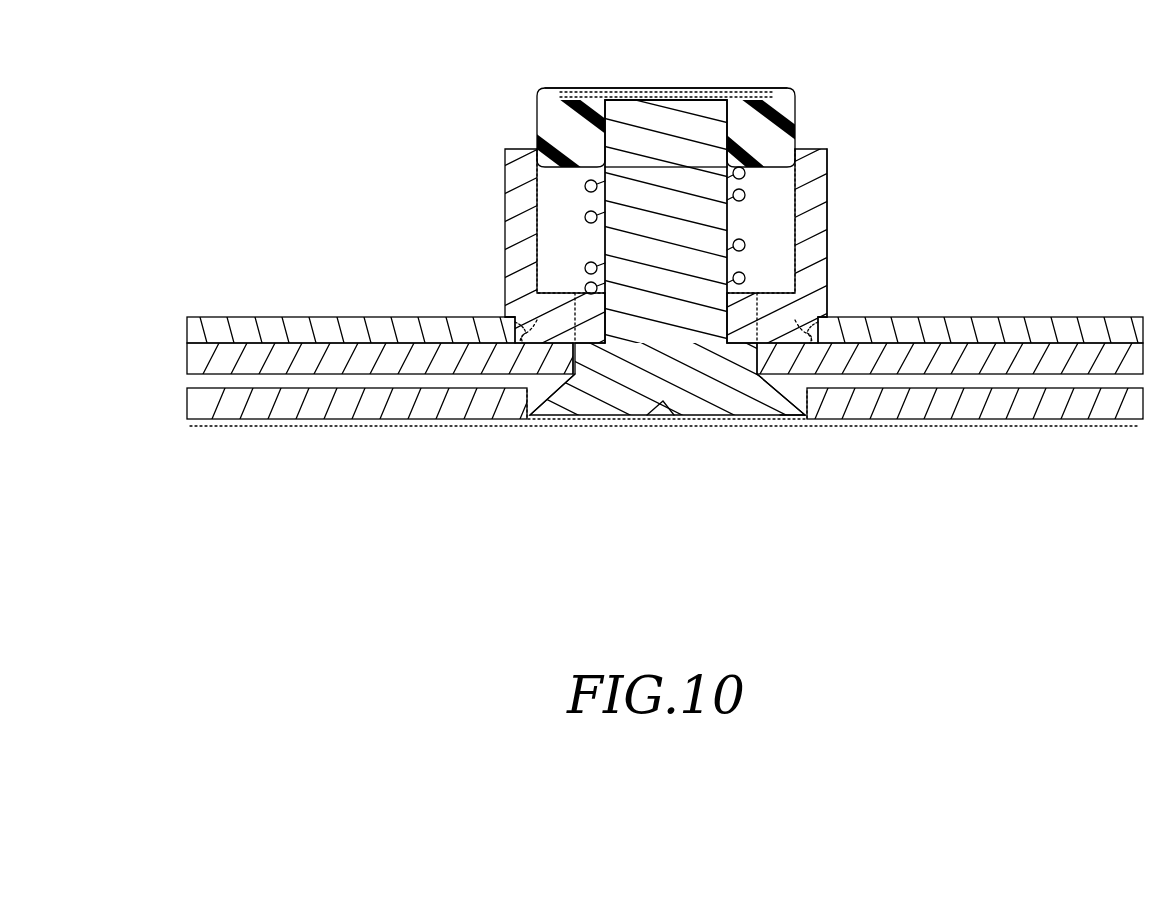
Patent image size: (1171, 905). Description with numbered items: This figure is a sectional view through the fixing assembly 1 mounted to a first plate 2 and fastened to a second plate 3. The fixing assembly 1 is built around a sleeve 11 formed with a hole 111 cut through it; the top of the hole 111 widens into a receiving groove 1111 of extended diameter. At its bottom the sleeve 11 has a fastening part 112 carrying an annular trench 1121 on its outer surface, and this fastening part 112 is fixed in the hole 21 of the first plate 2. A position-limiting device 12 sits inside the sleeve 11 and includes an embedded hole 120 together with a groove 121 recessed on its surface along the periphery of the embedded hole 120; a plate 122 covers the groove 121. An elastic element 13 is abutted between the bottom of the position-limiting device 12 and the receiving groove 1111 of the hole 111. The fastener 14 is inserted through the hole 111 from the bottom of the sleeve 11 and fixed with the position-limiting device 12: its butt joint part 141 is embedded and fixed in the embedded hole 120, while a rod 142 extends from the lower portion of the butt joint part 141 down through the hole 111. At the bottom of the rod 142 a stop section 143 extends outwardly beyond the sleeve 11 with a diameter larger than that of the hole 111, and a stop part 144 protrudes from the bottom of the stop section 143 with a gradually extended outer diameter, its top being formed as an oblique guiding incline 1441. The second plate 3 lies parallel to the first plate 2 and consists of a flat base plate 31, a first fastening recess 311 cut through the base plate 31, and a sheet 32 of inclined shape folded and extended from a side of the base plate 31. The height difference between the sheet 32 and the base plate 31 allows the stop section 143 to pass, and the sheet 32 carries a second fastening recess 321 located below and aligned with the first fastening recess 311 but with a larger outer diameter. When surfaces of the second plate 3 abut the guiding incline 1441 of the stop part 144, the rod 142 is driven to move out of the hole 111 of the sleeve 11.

The fixing assembly 1 is at (520, 128).
The sleeve 11 is at (824, 245).
The hole 111 is at (764, 212).
The receiving groove 1111 is at (824, 160).
The fastening part 112 is at (922, 288).
The annular trench 1121 is at (832, 302).
The position-limiting device 12 is at (790, 95).
The embedded hole 120 is at (613, 98).
The groove 121 is at (725, 97).
The plate 122 is at (745, 100).
The elastic element 13 is at (770, 160).
The fastener 14 is at (558, 421).
The butt joint part 141 is at (630, 130).
The rod 142 is at (652, 300).
The stop section 143 is at (587, 357).
The stop part 144 is at (790, 410).
The guiding incline 1441 is at (818, 418).
The first plate 2 is at (432, 330).
The hole 21 is at (500, 330).
The second plate 3 is at (285, 255).
The base plate 31 is at (315, 360).
The first fastening recess 311 is at (578, 330).
The sheet 32 is at (430, 405).
The second fastening recess 321 is at (530, 395).